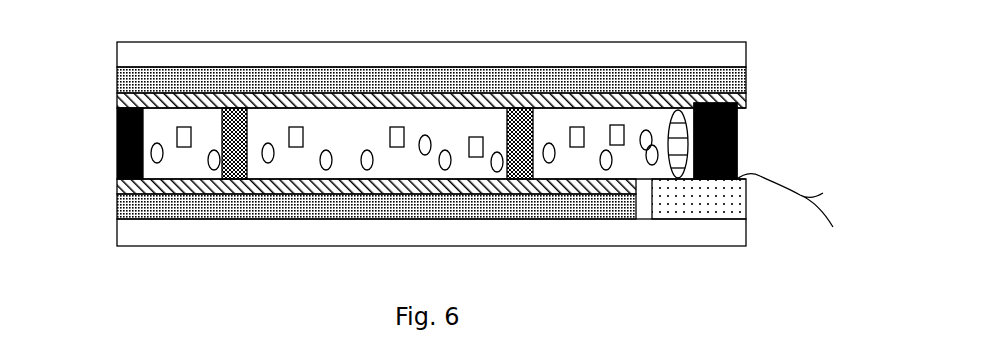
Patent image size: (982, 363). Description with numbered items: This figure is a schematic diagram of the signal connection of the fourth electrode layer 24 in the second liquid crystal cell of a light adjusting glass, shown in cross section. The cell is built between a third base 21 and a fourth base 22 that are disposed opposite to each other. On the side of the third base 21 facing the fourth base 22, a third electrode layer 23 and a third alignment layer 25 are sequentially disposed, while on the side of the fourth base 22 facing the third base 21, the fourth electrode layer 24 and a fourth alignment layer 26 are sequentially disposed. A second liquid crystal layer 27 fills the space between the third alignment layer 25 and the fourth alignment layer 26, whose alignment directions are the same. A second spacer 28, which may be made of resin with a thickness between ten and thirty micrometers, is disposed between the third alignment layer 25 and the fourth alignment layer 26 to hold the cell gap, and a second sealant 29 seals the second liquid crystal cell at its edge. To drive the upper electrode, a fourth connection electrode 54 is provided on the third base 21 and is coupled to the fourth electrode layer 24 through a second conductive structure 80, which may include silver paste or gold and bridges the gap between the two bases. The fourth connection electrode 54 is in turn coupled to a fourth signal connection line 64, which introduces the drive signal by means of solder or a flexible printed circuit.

The third base 21 is at (153, 239).
The fourth base 22 is at (687, 53).
The third electrode layer 23 is at (153, 213).
The fourth electrode layer 24 is at (687, 73).
The third alignment layer 25 is at (153, 187).
The fourth alignment layer 26 is at (687, 99).
The second liquid crystal layer 27 is at (606, 155).
The second spacer 28 is at (232, 141).
The second sealant 29 is at (737, 124).
The fourth connection electrode 54 is at (715, 203).
The fourth signal connection line 64 is at (794, 214).
The second conductive structure 80 is at (678, 110).